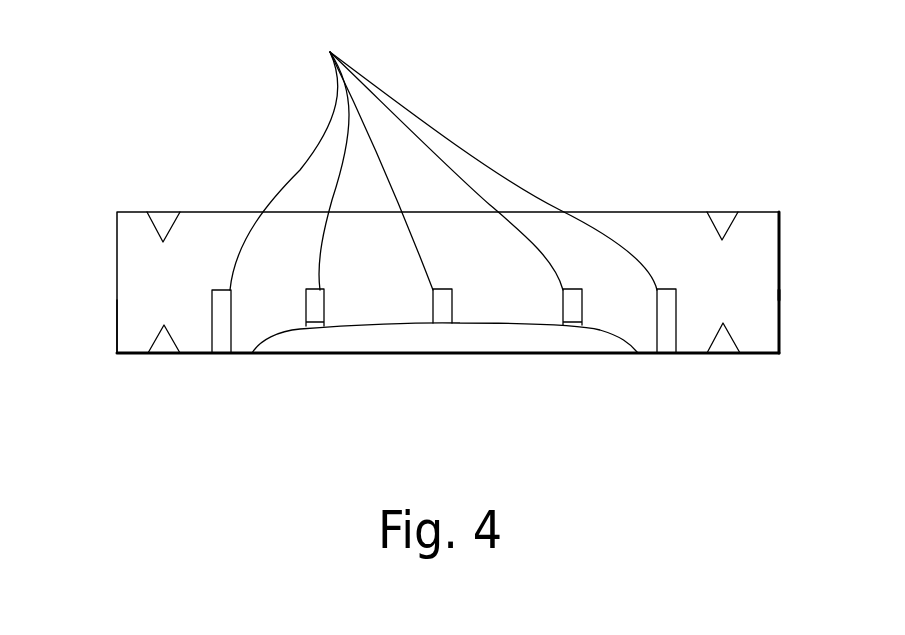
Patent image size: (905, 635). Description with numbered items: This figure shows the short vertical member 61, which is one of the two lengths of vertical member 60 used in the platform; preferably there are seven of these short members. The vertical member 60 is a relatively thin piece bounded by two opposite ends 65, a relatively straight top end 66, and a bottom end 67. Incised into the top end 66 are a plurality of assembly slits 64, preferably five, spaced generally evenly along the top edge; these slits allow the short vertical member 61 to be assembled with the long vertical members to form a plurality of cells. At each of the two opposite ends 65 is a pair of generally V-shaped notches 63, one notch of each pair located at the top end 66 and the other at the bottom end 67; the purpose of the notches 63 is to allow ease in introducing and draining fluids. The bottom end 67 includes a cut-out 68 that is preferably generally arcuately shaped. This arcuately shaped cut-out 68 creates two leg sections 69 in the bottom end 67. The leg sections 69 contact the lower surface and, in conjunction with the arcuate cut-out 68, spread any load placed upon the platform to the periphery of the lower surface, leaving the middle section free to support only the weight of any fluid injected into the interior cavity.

The vertical member 60 is at (133, 389).
The short vertical member 61 is at (780, 310).
The notches 63 is at (165, 220).
The assembly slits 64 is at (443, 157).
The opposite ends 65 is at (117, 283).
The top end 66 is at (760, 212).
The bottom end 67 is at (130, 355).
The cut-out 68 is at (402, 342).
The leg sections 69 is at (223, 353).